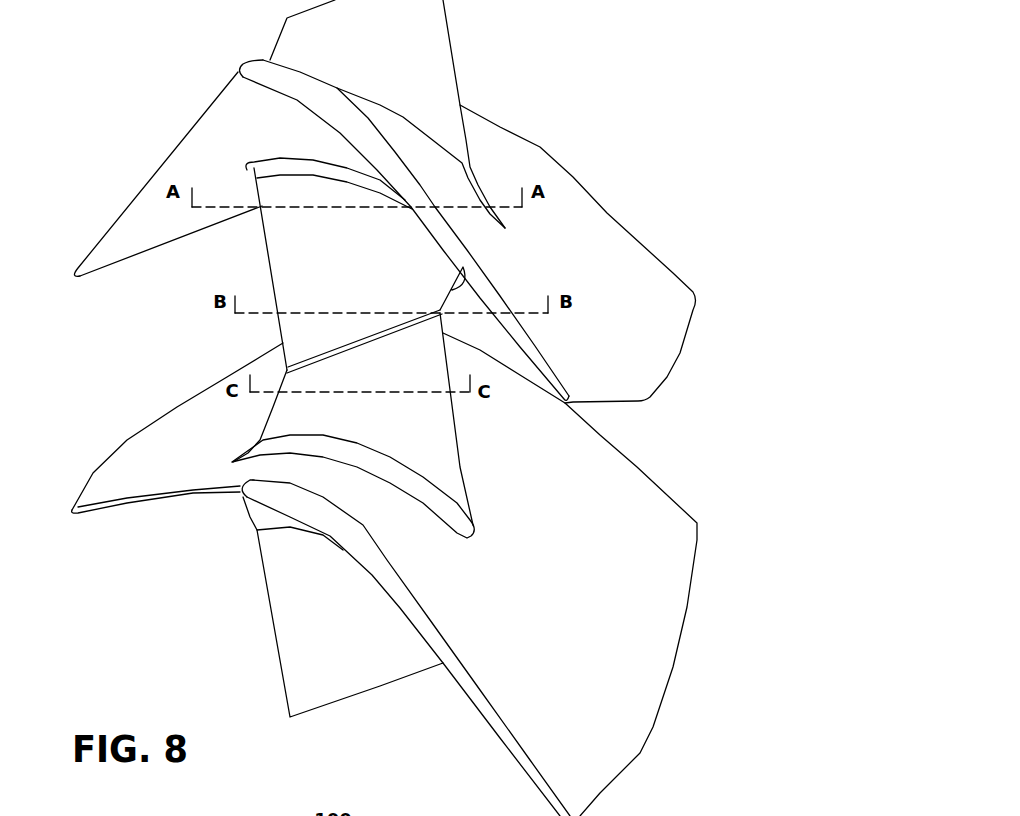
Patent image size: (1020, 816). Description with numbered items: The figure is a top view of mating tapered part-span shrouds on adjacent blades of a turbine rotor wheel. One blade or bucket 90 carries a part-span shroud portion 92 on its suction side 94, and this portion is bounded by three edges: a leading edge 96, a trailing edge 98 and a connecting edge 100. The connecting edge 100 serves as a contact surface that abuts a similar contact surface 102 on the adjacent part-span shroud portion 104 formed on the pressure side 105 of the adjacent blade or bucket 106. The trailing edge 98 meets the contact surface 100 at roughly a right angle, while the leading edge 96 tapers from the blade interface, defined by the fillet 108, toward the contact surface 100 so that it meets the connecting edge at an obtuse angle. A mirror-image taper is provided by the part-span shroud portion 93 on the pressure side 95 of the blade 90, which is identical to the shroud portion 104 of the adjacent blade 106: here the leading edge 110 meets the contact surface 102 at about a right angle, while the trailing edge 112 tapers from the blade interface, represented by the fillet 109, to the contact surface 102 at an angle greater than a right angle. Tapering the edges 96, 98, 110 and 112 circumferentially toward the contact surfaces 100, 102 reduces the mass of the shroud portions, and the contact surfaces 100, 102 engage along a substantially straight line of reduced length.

The blade 90 is at (661, 467).
The part-span shroud portion 92 is at (468, 414).
The part-span shroud portion 93 is at (271, 650).
The suction side 94 is at (207, 427).
The pressure side 95 is at (180, 497).
The leading edge 96 is at (282, 386).
The trailing edge 98 is at (467, 447).
The connecting edge 100 is at (357, 343).
The contact surface 102 is at (379, 333).
The part-span shroud portion 104 is at (256, 236).
The pressure side 105 is at (118, 252).
The adjacent blade 106 is at (166, 136).
The fillet 108 is at (402, 473).
The fillet 109 is at (318, 172).
The leading edge 110 is at (270, 266).
The trailing edge 112 is at (460, 268).